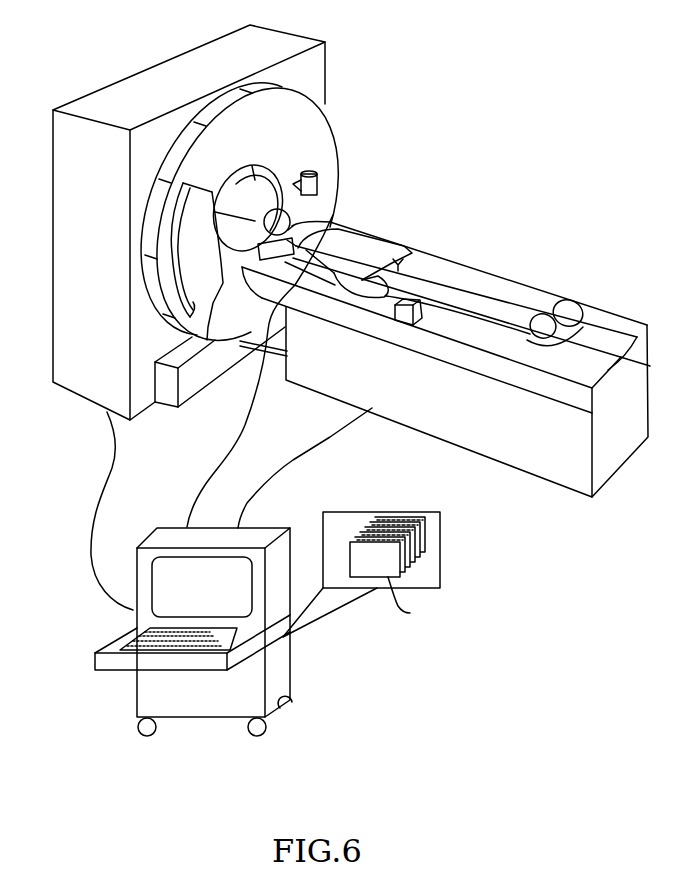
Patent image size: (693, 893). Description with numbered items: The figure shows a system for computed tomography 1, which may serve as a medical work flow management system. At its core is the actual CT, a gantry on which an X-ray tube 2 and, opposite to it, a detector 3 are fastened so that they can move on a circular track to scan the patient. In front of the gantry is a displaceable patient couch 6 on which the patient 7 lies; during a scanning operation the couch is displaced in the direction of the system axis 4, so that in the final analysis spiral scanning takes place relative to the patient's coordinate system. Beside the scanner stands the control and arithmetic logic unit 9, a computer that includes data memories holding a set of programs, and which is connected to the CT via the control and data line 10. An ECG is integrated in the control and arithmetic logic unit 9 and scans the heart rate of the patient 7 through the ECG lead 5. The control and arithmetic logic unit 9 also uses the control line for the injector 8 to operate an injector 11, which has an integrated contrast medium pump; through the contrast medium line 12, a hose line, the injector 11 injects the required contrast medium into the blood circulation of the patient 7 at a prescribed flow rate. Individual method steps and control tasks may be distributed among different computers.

The system for computed tomography 1 is at (468, 159).
The X-ray tube 2 is at (320, 180).
The detector 3 is at (190, 302).
The system axis 4 is at (650, 366).
The ECG lead 5 is at (213, 463).
The displaceable patient couch 6 is at (429, 420).
The patient 7 is at (340, 230).
The control line for the injector 8 is at (259, 482).
The control and arithmetic logic unit 9 is at (281, 677).
The control and data line to the CT 10 is at (100, 480).
The injector 11 is at (440, 273).
The contrast medium line 12 is at (357, 277).